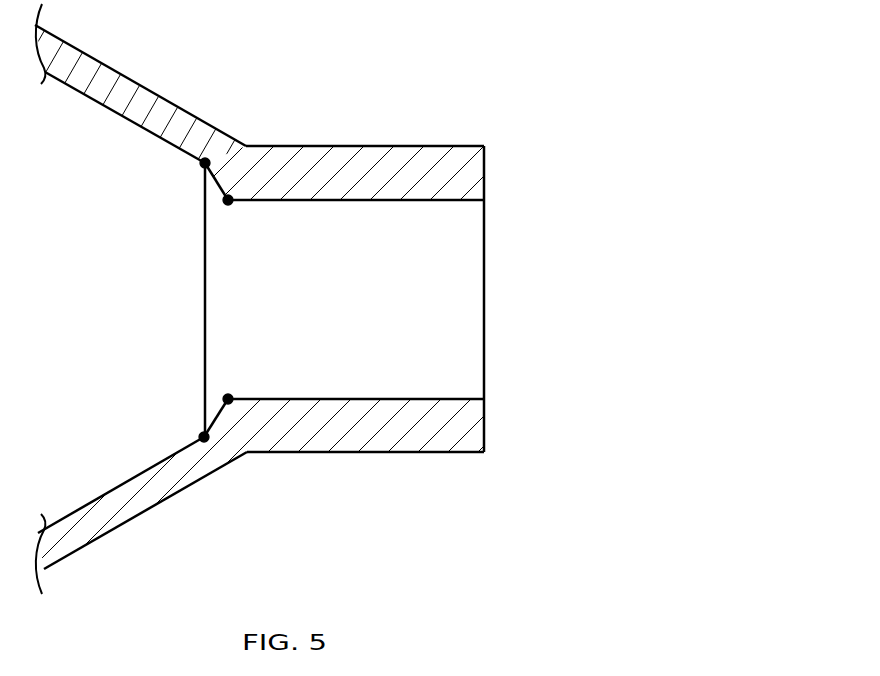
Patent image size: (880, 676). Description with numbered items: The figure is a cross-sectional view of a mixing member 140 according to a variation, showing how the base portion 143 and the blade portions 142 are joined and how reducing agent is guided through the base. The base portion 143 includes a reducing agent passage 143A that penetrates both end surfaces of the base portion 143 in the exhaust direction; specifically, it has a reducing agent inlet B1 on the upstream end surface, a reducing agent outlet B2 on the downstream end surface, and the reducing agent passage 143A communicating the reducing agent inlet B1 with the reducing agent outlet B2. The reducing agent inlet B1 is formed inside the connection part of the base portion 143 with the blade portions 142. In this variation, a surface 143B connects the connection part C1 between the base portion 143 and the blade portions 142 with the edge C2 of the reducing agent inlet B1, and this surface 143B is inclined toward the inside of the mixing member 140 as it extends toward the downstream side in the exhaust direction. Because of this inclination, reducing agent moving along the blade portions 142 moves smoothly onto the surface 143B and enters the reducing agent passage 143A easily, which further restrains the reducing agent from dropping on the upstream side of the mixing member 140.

The mixing member 140 is at (425, 67).
The blade portions 142 is at (155, 108).
The base portion 143 is at (333, 158).
The reducing agent passage 143A is at (362, 312).
The surface 143B is at (215, 183).
The connection part C1 is at (200, 163).
The edge C2 is at (224, 203).
The reducing agent inlet B1 is at (203, 307).
The reducing agent outlet B2 is at (486, 280).